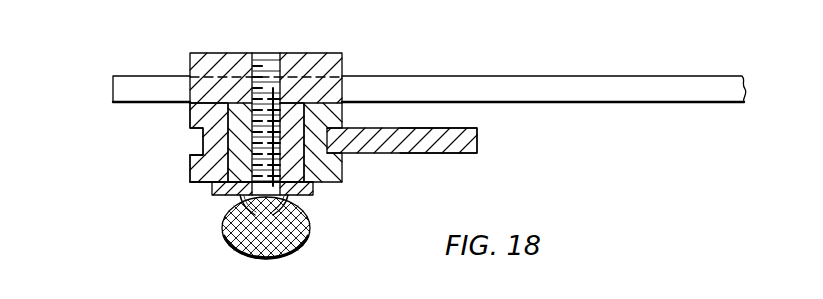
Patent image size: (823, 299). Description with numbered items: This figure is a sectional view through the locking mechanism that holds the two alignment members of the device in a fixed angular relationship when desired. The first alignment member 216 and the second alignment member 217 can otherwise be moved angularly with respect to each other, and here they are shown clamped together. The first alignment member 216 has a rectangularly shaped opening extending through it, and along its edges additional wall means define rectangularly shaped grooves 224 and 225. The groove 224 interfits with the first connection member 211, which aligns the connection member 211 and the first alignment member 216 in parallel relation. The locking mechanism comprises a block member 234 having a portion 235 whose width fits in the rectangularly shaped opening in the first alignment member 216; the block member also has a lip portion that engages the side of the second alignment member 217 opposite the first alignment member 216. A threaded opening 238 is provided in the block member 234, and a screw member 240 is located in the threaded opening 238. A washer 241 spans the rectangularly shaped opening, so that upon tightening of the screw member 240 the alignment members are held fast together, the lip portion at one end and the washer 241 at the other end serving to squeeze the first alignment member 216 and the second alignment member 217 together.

The block member 234 is at (190, 115).
The second alignment member 217 is at (473, 83).
The threaded opening 238 is at (262, 52).
The groove 225 is at (203, 142).
The first alignment member 216 is at (190, 164).
The portion 235 is at (300, 156).
The groove 224 is at (338, 154).
The first connection member 211 is at (448, 154).
The washer 241 is at (212, 188).
The screw member 240 is at (240, 190).